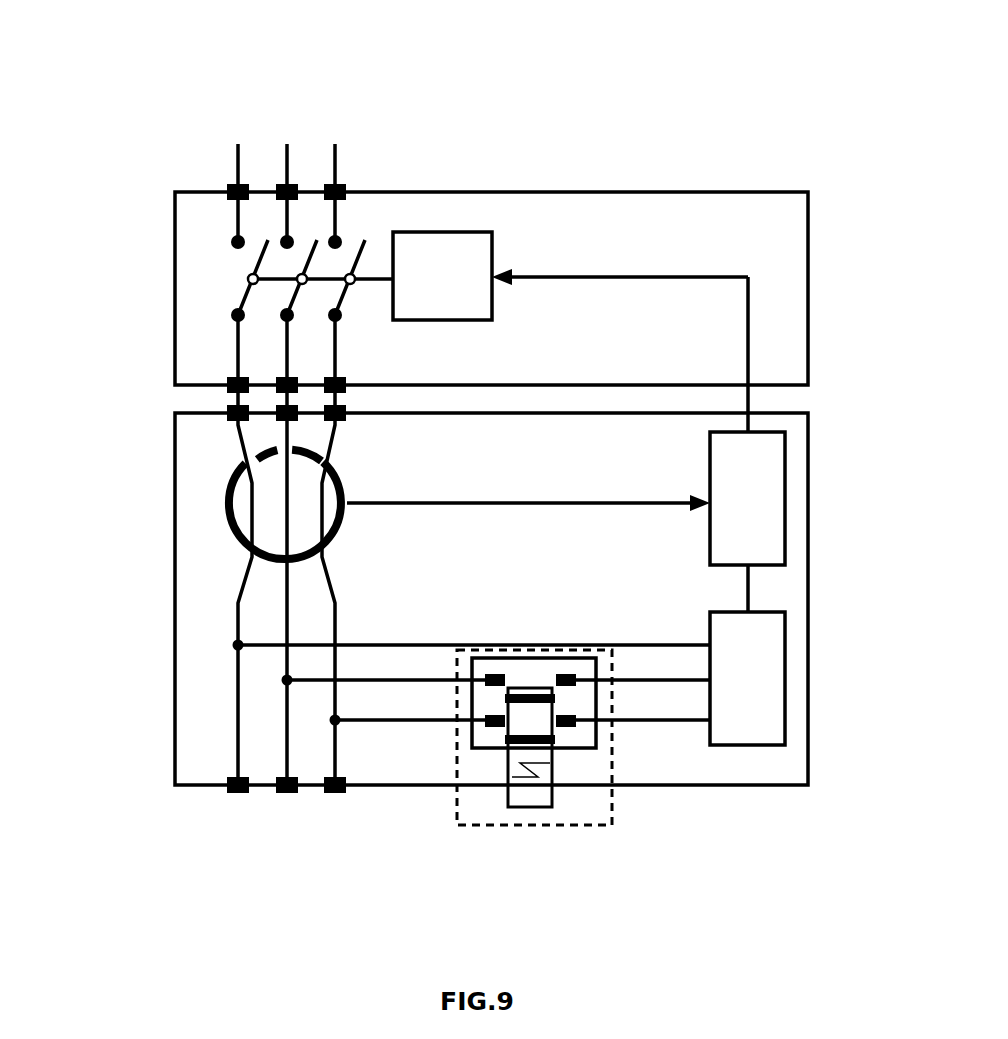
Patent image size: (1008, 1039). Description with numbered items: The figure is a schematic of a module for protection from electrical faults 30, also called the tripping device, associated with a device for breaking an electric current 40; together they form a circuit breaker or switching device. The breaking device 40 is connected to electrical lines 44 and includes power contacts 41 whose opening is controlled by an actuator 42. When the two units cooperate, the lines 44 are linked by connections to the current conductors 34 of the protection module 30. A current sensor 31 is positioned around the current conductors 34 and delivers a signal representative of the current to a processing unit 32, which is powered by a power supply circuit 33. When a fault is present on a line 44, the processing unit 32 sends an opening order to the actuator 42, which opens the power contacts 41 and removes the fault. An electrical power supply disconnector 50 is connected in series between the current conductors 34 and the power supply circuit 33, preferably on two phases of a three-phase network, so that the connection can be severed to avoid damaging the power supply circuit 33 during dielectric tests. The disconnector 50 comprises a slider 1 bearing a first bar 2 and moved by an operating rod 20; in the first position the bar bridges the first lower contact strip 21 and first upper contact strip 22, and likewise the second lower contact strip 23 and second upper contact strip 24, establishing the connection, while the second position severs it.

The slider 1 is at (515, 753).
The first bar 2 is at (555, 738).
The operating rod 20 is at (527, 798).
The first lower contact strip 21 is at (490, 723).
The first upper contact strip 22 is at (575, 724).
The second lower contact strip 23 is at (490, 682).
The second upper contact strip 24 is at (575, 683).
The module for protection from electrical faults 30 is at (192, 447).
The current sensor 31 is at (227, 518).
The processing unit 32 is at (768, 515).
The power supply circuit 33 is at (760, 693).
The current conductors 34 is at (288, 697).
The device for breaking an electric current 40 is at (550, 258).
The power contacts 41 is at (242, 296).
The actuator 42 is at (430, 257).
The electrical lines 44 is at (335, 163).
The electrical power supply disconnector 50 is at (612, 805).